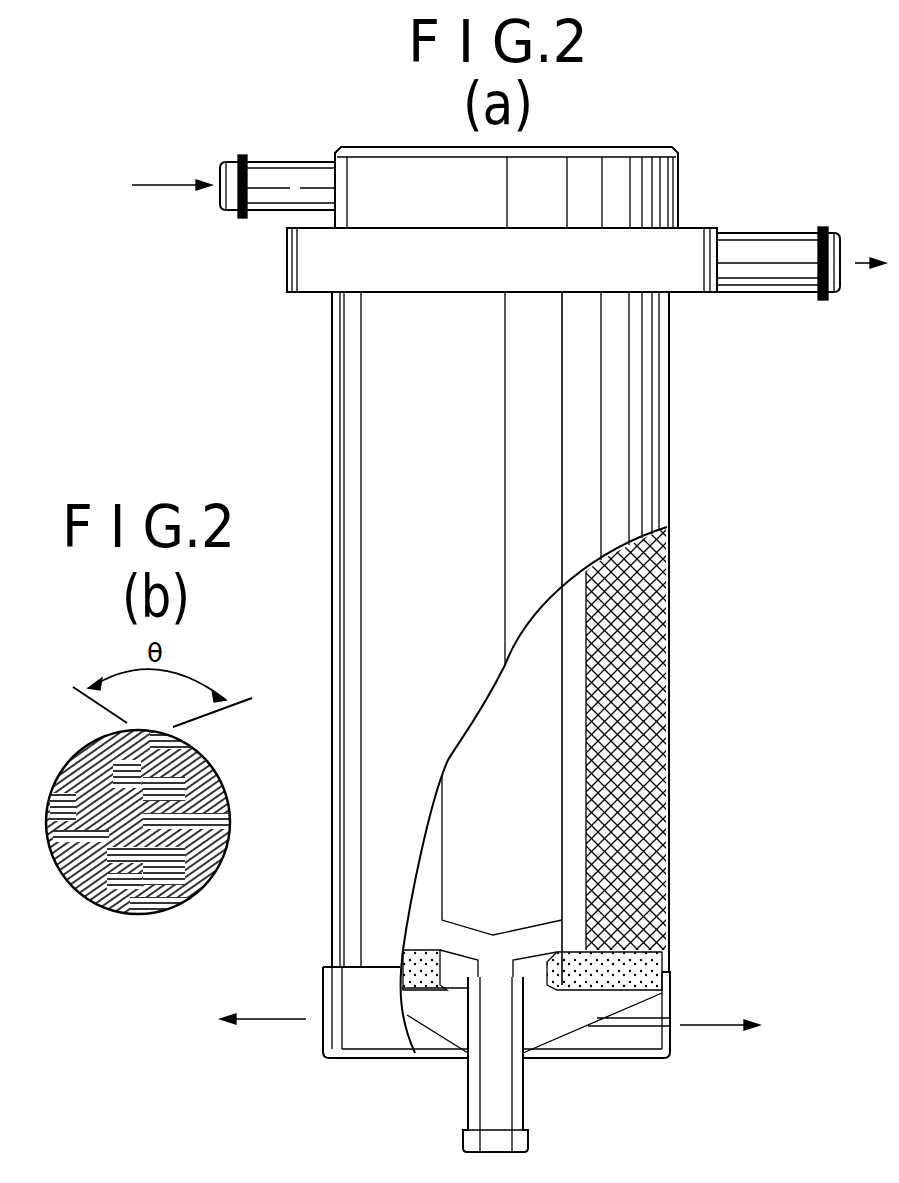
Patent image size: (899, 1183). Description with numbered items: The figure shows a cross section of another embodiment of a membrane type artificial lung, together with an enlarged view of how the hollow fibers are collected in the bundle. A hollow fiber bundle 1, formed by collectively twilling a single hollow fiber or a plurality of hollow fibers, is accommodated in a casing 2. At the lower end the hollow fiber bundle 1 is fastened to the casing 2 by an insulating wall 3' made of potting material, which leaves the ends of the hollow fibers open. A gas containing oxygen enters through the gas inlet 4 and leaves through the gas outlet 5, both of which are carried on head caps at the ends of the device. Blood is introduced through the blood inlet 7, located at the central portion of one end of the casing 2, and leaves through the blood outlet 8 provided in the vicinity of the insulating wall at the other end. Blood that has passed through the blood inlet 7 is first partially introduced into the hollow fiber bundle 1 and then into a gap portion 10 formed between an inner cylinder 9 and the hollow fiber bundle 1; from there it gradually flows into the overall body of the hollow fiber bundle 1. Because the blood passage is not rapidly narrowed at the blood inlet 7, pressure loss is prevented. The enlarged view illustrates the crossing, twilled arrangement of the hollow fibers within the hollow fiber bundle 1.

The hollow fiber bundle 1 is at (645, 855).
The casing 2 is at (670, 540).
The insulating wall 3' is at (565, 961).
The gas inlet 4 is at (280, 160).
The gas outlet 5 is at (668, 1012).
The blood inlet 7 is at (528, 1112).
The blood outlet 8 is at (773, 278).
The inner cylinder 9 is at (530, 808).
The gap portion 10 is at (565, 846).